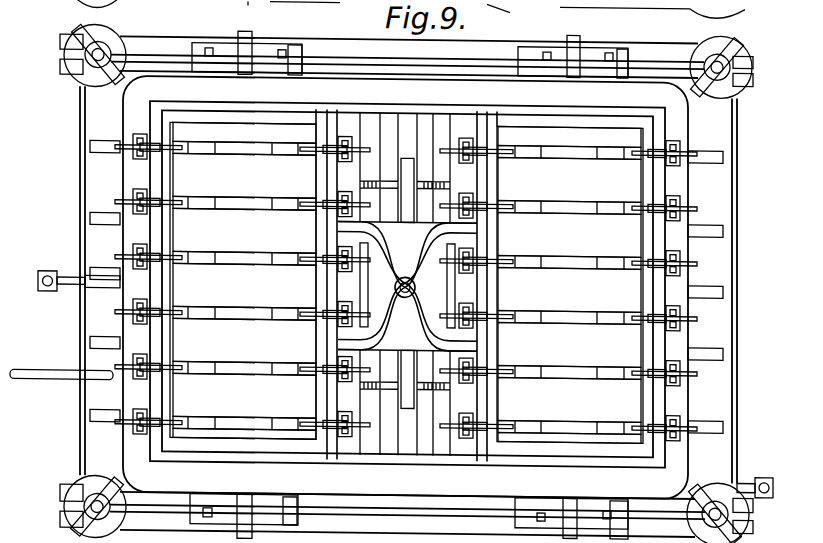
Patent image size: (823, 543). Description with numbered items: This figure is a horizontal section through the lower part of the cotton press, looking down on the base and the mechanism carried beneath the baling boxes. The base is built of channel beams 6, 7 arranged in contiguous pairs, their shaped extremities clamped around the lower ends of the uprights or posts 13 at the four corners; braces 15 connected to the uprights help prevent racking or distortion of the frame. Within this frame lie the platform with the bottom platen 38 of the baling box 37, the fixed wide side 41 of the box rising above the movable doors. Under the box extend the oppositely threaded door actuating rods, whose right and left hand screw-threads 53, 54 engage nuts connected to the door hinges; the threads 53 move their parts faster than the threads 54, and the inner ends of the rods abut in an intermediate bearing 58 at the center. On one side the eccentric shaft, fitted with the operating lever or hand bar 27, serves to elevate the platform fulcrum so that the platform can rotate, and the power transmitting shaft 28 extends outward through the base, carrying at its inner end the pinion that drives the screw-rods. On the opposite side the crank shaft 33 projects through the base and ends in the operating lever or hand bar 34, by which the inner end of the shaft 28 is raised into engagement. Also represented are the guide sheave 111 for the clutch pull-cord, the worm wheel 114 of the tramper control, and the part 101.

The channel beam 6 is at (742, 45).
The channel beam 7 is at (752, 68).
The upright or post 13 is at (83, 71).
The brace 15 is at (738, 180).
The operating lever or hand bar 27 is at (45, 294).
The power transmitting shaft 28 is at (53, 381).
The crank shaft 33 is at (700, 471).
The operating lever or hand bar 34 is at (765, 452).
The baling box 37 is at (153, 232).
The bottom platen 38 is at (406, 283).
The fixed wide side 41 is at (660, 122).
The screw-thread 53 is at (430, 180).
The screw-thread 54 is at (365, 175).
The intermediate bearing 58 is at (412, 174).
The part 101 is at (616, 14).
The guide sheave 111 is at (309, 14).
The worm wheel 114 is at (162, 14).